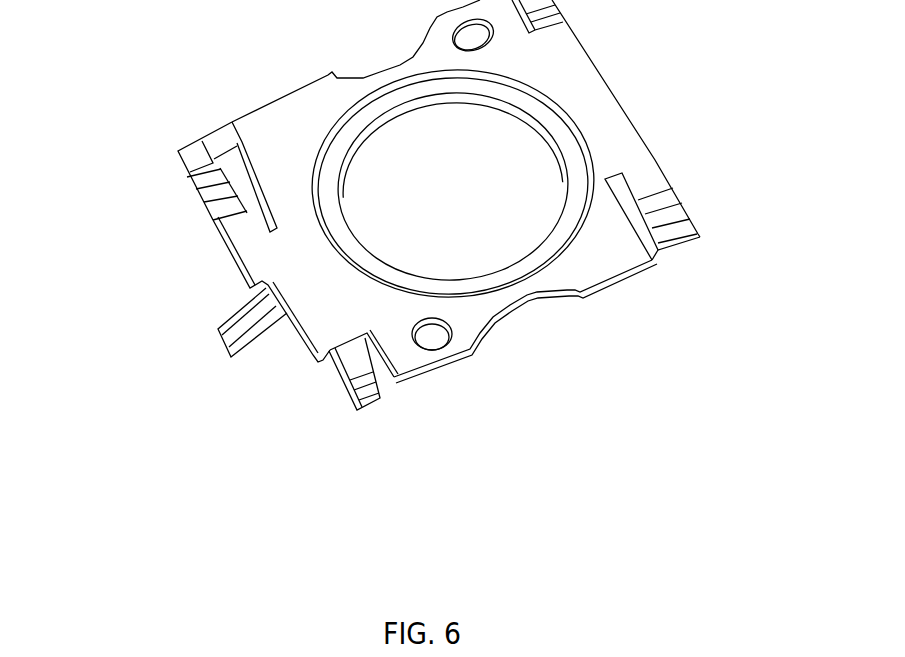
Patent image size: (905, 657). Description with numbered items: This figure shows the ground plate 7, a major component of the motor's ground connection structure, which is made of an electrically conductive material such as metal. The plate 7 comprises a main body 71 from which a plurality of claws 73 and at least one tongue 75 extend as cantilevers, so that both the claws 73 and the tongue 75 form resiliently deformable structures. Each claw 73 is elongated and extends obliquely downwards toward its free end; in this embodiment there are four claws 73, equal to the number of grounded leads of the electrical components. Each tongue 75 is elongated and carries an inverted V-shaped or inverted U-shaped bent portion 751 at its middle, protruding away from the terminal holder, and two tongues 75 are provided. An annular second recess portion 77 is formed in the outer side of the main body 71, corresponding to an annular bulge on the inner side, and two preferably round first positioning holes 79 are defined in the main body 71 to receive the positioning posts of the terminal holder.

The plate 7 is at (577, 93).
The main body 71 is at (590, 248).
The claws 73 is at (255, 318).
The tongue 75 is at (237, 231).
The bent portion 751 is at (187, 182).
The second recess portion 77 is at (493, 282).
The first positioning holes 79 is at (424, 347).